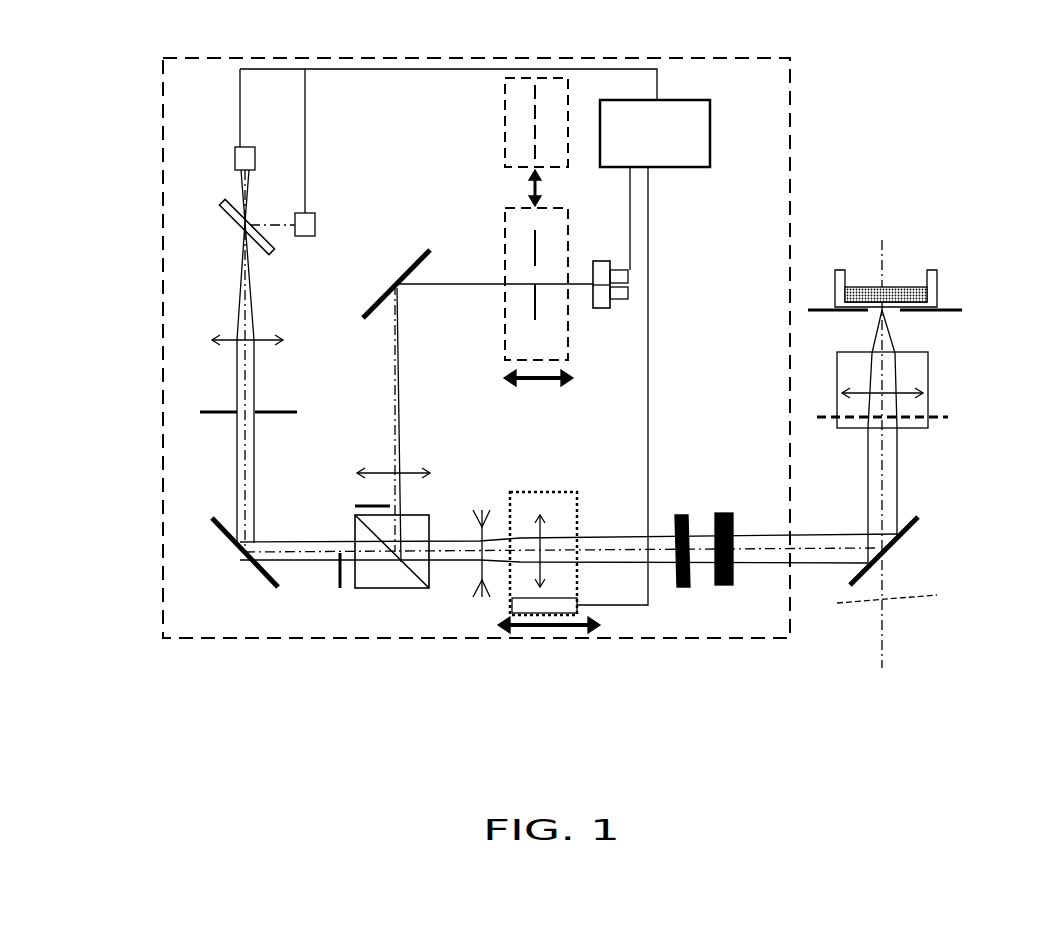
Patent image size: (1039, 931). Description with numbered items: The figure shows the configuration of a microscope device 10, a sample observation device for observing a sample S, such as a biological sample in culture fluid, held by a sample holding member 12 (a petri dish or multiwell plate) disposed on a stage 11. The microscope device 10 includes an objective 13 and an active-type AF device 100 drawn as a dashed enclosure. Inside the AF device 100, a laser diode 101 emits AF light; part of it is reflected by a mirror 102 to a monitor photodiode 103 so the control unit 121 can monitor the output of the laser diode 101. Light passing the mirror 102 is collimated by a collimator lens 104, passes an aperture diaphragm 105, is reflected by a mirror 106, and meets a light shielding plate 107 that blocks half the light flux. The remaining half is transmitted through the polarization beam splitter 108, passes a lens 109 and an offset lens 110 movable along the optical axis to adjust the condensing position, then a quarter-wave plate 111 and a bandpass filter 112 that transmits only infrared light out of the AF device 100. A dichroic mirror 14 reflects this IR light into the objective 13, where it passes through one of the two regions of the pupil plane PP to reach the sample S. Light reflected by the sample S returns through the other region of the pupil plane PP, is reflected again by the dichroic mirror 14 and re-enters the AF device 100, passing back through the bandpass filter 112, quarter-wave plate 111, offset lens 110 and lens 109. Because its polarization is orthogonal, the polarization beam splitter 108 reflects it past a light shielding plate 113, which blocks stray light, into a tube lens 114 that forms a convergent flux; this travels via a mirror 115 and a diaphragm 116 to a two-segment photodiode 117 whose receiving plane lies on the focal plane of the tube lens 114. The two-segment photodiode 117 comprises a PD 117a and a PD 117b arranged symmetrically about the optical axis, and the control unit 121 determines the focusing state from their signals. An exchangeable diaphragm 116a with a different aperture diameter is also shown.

The microscope device 10 is at (834, 42).
The AF device 100 is at (598, 57).
The laser diode 101 is at (248, 148).
The mirror 102 is at (226, 214).
The monitor photodiode 103 is at (316, 225).
The collimator lens 104 is at (265, 338).
The aperture diaphragm 105 is at (262, 413).
The mirror 106 is at (246, 571).
The light shielding plate 107 is at (335, 579).
The polarization beam splitter 108 is at (382, 590).
The lens 109 is at (475, 510).
The offset lens 110 is at (537, 512).
The quarter-wave plate 111 is at (678, 514).
The bandpass filter 112 is at (722, 512).
The light shielding plate 113 is at (365, 505).
The tube lens 114 is at (423, 472).
The mirror 115 is at (414, 256).
The diaphragm 116 is at (530, 312).
The diaphragm 116a is at (525, 97).
The two-segment photodiode 117 is at (687, 287).
The PD 117a is at (628, 274).
The PD 117b is at (628, 293).
The control unit 121 is at (712, 100).
The stage 11 is at (932, 312).
The sample holding member 12 is at (937, 280).
The objective 13 is at (930, 370).
The dichroic mirror 14 is at (905, 536).
The sample S is at (897, 273).
The pupil plane PP is at (940, 418).